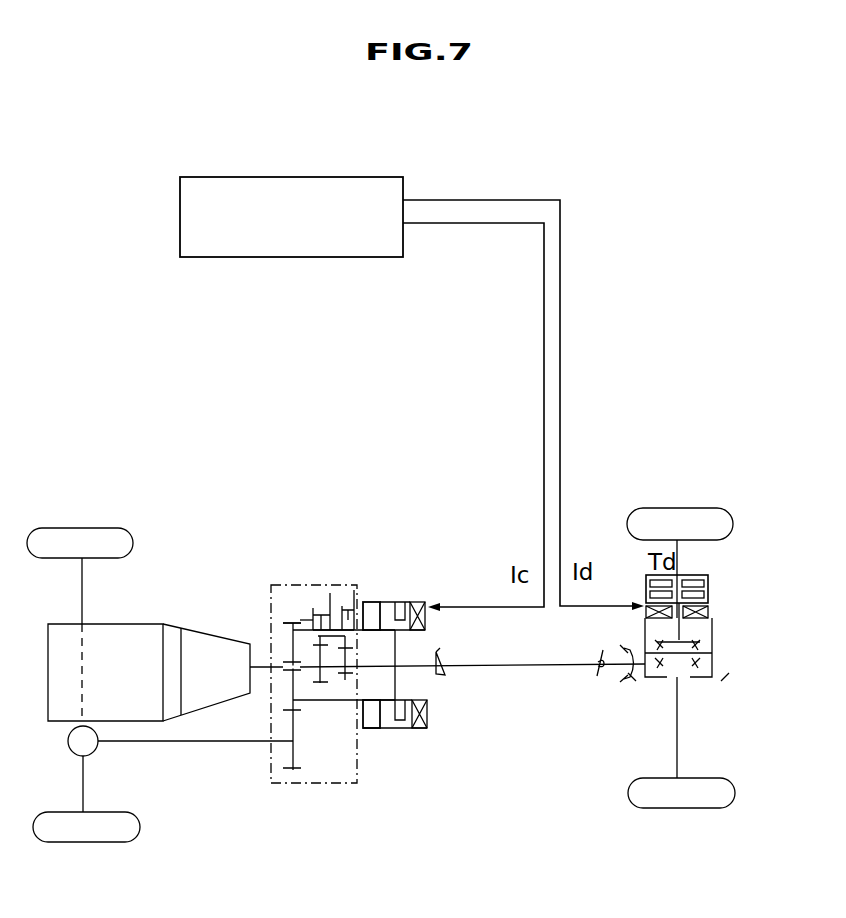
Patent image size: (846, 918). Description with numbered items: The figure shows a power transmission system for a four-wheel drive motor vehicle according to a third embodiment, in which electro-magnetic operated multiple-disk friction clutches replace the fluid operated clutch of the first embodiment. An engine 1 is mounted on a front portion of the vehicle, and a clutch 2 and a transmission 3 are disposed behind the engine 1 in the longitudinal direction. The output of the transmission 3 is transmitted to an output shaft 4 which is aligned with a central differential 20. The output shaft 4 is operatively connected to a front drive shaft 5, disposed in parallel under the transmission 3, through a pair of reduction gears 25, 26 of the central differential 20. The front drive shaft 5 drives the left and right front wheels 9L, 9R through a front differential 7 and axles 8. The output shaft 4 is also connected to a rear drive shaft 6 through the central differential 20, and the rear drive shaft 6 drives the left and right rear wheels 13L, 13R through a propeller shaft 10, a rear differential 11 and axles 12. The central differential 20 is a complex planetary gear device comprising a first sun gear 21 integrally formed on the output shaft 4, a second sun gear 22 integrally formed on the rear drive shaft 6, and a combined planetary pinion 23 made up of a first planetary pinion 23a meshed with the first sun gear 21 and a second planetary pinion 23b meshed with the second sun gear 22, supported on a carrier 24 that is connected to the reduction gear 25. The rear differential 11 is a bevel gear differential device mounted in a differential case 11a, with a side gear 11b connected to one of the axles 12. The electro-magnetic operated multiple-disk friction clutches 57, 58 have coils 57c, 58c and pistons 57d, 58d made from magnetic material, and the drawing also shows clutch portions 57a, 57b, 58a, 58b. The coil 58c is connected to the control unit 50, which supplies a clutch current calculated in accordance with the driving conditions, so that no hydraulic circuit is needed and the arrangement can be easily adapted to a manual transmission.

The engine 1 is at (110, 630).
The clutch 2 is at (165, 628).
The transmission 3 is at (208, 632).
The output shaft 4 is at (261, 666).
The front drive shaft 5 is at (210, 745).
The rear drive shaft 6 is at (425, 673).
The front differential 7 is at (68, 741).
The axles 8 is at (85, 780).
The right front wheel 9R is at (122, 528).
The left front wheel 9L is at (135, 812).
The propeller shaft 10 is at (527, 667).
The rear differential 11 is at (713, 650).
The differential case 11a is at (713, 643).
The side gear 11b is at (693, 637).
The axles 12 is at (681, 730).
The right rear wheel 13R is at (733, 526).
The left rear wheel 13L is at (735, 791).
The central differential 20 is at (328, 786).
The first sun gear 21 is at (320, 686).
The second sun gear 22 is at (345, 680).
The combined planetary pinion 23 is at (331, 612).
The first planetary pinion 23a is at (313, 606).
The second planetary pinion 23b is at (353, 606).
The carrier 24 is at (305, 618).
The reduction gear 25 is at (290, 620).
The reduction gear 26 is at (292, 770).
The control unit 50 is at (328, 257).
The electro-magnetic operated multiple-disk friction clutch 57 is at (442, 656).
The clutch plate 57a is at (375, 602).
The clutch joint 57b is at (469, 656).
The coil 57c is at (424, 602).
The piston 57d is at (375, 730).
The electro-magnetic operated multiple-disk friction clutch 58 is at (708, 581).
The clutch plate 58a is at (697, 575).
The clutch plate 58b is at (645, 598).
The coil 58c is at (713, 600).
The piston 58d is at (647, 583).